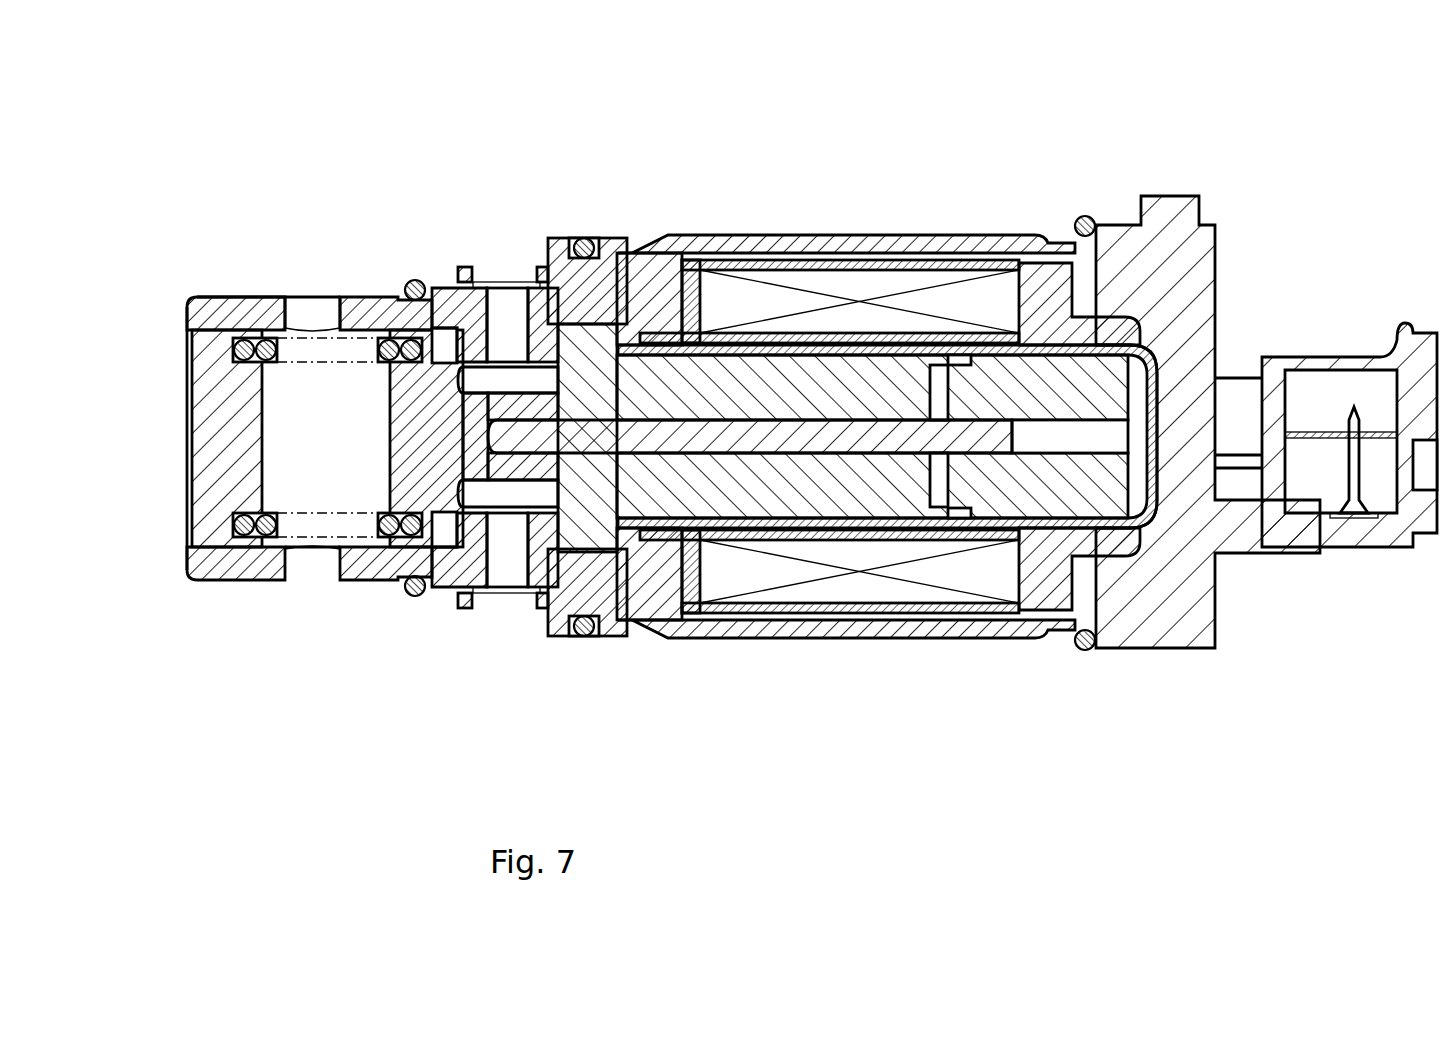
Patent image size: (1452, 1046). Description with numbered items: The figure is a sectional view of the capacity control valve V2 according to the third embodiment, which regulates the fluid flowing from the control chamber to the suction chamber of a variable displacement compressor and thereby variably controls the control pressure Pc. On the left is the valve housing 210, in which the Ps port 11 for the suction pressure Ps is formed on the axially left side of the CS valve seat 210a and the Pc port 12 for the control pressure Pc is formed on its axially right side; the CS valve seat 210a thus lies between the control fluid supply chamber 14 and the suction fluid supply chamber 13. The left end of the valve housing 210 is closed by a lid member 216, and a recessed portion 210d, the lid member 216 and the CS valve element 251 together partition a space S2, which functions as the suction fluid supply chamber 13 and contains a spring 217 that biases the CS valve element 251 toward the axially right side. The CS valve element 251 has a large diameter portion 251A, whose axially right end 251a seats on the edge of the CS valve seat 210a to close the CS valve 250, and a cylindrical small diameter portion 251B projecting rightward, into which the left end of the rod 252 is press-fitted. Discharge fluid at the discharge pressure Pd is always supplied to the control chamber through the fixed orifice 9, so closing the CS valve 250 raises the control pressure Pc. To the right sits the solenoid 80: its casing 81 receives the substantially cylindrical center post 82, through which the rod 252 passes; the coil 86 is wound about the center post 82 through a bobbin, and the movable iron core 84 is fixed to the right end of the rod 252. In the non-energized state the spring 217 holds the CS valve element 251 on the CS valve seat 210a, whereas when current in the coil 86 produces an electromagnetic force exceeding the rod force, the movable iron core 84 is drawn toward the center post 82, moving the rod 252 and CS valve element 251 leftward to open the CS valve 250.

The capacity control valve V2 is at (1238, 138).
The solenoid 80 is at (1018, 142).
The casing 81 is at (618, 650).
The center post 82 is at (858, 338).
The movable iron core 84 is at (1013, 490).
The coil 86 is at (882, 638).
The fixed orifice 9 is at (507, 161).
The Ps port 11 is at (290, 298).
The Pc port 12 is at (520, 318).
The control fluid supply chamber 14 is at (510, 507).
The valve housing 210 is at (195, 290).
The CS valve seat 210a is at (447, 500).
The recessed portion 210d is at (228, 336).
The lid member 216 is at (212, 465).
The spring 217 is at (252, 298).
The CS valve 250 is at (456, 579).
The CS valve element 251 is at (431, 348).
The large diameter portion 251A is at (405, 283).
The small diameter portion 251B is at (462, 283).
The axially right end 251a is at (468, 610).
The rod 252 is at (702, 430).
The space S2 is at (327, 457).
The suction fluid supply chamber 13 is at (318, 509).
The suction pressure Ps is at (312, 297).
The discharge pressure Pd is at (507, 190).
The control pressure Pc is at (507, 297).